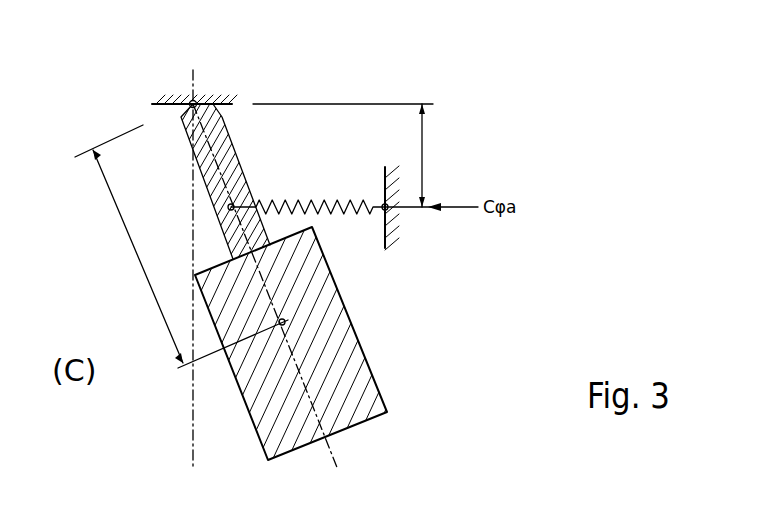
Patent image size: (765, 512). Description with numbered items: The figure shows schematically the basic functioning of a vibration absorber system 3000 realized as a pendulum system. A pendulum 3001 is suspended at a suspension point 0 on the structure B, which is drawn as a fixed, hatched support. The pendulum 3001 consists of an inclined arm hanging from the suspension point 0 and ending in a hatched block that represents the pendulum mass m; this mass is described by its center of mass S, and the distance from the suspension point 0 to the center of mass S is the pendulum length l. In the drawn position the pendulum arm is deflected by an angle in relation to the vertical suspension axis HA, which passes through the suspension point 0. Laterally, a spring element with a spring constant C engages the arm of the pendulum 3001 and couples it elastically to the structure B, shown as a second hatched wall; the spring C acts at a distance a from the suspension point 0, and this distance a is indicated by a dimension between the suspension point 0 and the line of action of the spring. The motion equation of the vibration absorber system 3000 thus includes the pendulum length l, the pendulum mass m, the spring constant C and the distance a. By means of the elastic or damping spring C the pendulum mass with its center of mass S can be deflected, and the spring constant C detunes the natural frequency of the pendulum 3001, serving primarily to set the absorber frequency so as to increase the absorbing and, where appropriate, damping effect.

The vibration absorber system 3000 is at (395, 82).
The pendulum 3001 is at (289, 342).
The structure B is at (160, 100).
The suspension point 0 is at (179, 115).
The spring constant C is at (314, 200).
The distance a is at (428, 145).
The center of mass S is at (285, 322).
The pendulum mass m is at (358, 385).
The pendulum length l is at (137, 262).
The suspension axis HA is at (192, 402).